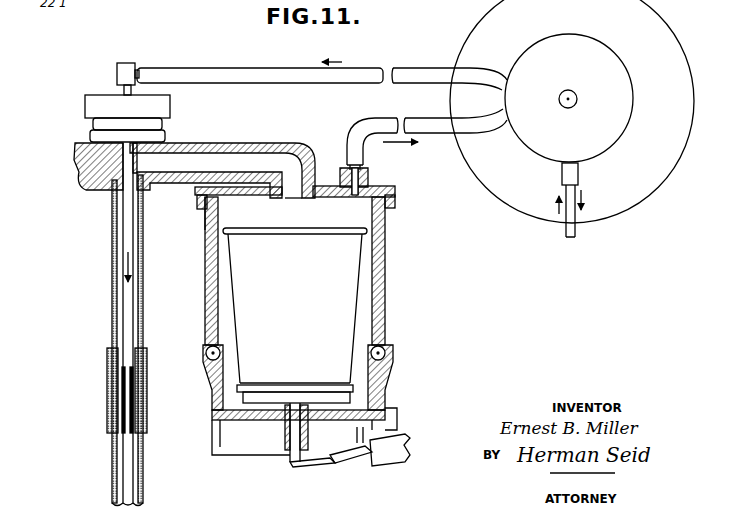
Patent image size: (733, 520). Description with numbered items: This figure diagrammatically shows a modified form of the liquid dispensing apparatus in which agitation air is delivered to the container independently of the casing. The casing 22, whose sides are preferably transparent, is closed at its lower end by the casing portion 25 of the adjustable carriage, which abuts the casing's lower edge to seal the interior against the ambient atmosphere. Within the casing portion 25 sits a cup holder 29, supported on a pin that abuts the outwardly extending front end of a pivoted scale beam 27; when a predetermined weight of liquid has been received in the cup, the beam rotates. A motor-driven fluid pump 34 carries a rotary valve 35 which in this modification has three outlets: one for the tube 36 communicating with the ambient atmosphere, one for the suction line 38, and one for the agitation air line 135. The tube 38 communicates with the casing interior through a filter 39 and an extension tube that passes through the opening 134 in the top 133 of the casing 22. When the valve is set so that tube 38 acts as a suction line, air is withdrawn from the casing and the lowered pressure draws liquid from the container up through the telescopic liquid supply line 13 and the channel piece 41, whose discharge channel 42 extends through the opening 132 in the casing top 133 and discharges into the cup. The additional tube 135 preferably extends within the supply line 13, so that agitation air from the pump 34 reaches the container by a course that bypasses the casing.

The liquid supply line 13 is at (148, 480).
The casing 22 is at (385, 266).
The casing portion 25 is at (393, 363).
The scale beam 27 is at (398, 456).
The cup holder 29 is at (352, 396).
The fluid pump 34 is at (640, 0).
The rotary valve 35 is at (569, 37).
The tube 36 is at (580, 235).
The tube 38 is at (437, 130).
The filter 39 is at (86, 106).
The channel piece 41 is at (250, 144).
The discharge channel 42 is at (292, 186).
The opening 132 is at (270, 196).
The top of casing 133 is at (207, 218).
The opening 134 is at (352, 186).
The tube 135 is at (197, 75).